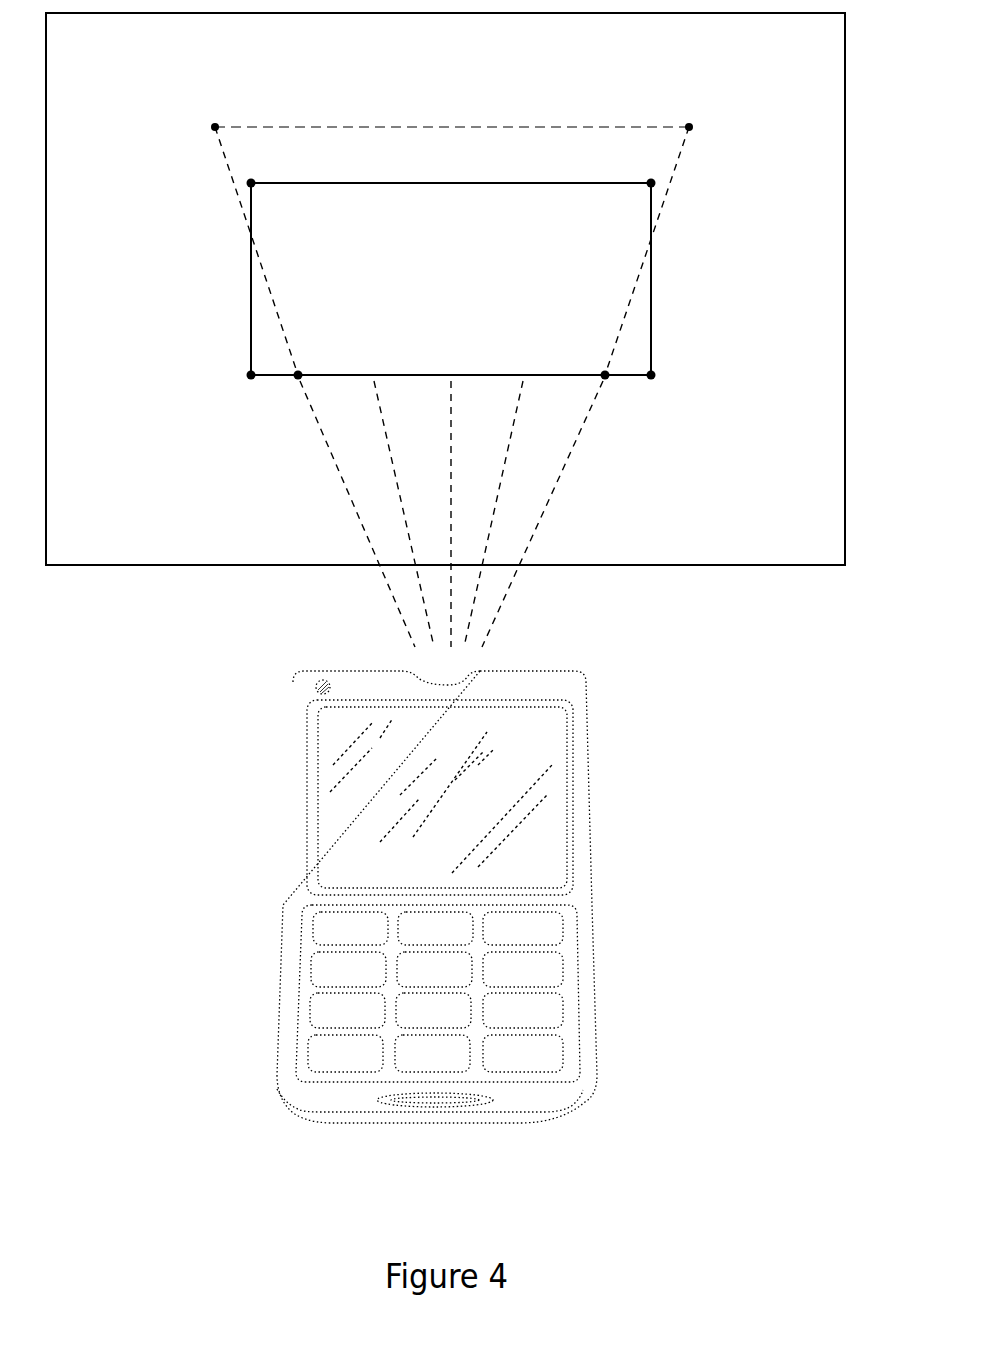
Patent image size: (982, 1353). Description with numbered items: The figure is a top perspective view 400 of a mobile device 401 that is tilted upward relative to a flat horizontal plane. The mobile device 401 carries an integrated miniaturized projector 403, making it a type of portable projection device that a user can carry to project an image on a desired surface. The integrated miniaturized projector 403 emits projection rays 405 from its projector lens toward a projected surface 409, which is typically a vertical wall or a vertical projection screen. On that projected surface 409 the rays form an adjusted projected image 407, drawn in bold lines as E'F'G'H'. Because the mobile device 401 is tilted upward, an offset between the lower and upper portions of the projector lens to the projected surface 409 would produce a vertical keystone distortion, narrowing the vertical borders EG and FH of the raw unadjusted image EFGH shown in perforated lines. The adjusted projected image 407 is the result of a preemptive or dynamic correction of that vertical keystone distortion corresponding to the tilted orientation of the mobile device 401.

The top perspective view 400 is at (462, 1214).
The mobile device 401 is at (262, 821).
The integrated miniaturized projector 403 is at (459, 661).
The projection rays 405 is at (354, 597).
The adjusted projected image 407 is at (422, 292).
The projected surface 409 is at (751, 527).